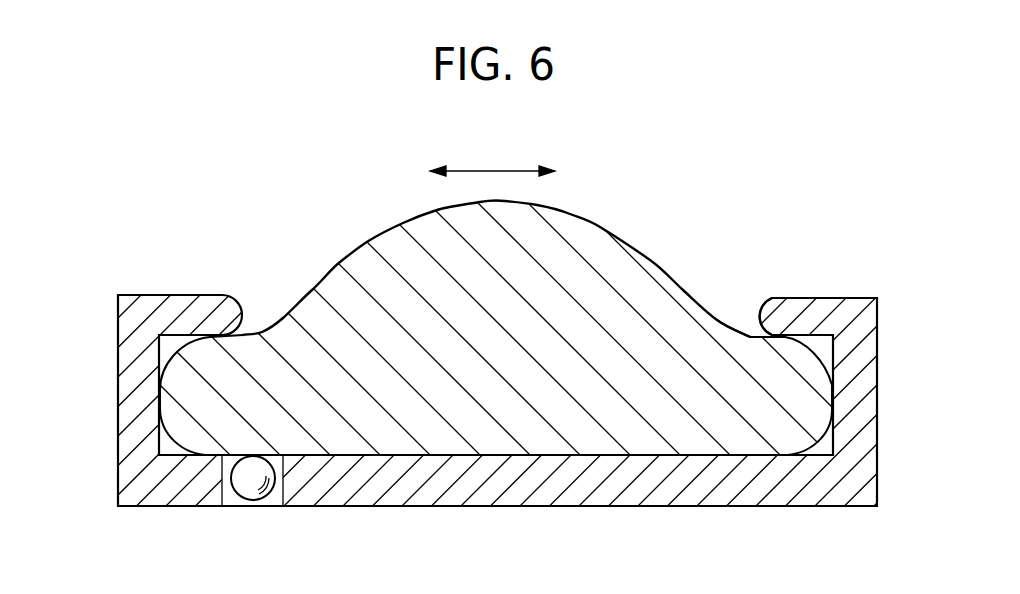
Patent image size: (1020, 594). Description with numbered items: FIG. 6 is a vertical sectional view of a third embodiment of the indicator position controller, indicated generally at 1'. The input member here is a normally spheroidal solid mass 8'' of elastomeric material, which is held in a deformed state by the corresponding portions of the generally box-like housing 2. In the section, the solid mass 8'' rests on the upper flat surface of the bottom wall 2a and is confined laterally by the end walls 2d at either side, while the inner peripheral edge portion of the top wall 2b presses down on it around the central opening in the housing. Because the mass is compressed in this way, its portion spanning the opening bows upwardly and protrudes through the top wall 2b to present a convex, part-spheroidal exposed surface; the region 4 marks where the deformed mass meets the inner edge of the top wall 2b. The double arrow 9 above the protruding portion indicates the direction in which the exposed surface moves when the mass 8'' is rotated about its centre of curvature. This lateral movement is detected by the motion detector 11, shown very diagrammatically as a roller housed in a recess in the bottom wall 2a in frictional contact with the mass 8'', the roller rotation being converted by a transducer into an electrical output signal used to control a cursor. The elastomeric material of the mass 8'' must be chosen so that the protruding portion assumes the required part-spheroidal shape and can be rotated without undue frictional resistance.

The sealing arrangement 1' is at (510, 418).
The housing 2 is at (612, 507).
The bottom wall 2a is at (432, 490).
The top wall 2b is at (793, 313).
The end wall 2d is at (132, 385).
The contact point of seal and lip 4 is at (743, 318).
The solid mass of elastomeric material 8'' is at (510, 322).
The double arrow 9 is at (497, 171).
The motion detector 11 is at (255, 482).